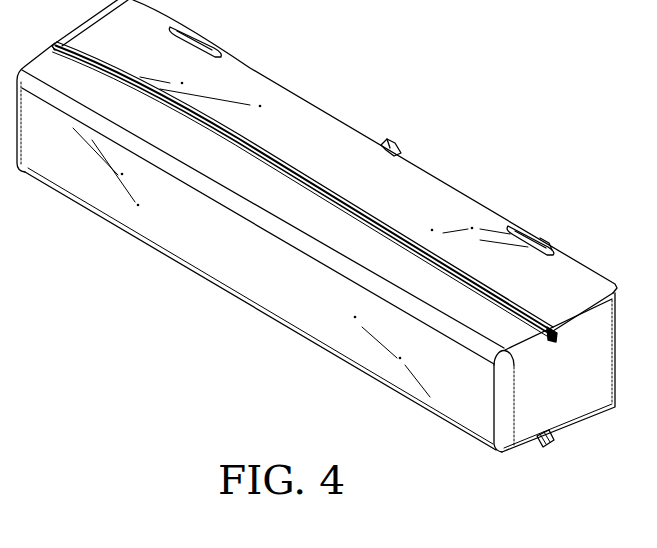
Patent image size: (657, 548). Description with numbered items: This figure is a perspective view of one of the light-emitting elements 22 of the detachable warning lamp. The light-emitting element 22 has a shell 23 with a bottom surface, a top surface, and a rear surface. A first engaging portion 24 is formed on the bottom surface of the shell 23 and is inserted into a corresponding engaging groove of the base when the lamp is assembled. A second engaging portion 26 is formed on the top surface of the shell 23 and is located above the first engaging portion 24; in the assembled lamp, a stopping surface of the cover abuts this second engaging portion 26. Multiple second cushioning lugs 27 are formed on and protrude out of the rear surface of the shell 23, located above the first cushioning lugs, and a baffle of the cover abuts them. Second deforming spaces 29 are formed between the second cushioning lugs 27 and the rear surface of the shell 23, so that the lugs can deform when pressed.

The light-emitting element 22 is at (157, 262).
The shell 23 is at (307, 123).
The first engaging portion 24 is at (537, 447).
The second engaging portion 26 is at (510, 300).
The second cushioning lug 27 is at (522, 228).
The second deforming space 29 is at (540, 238).